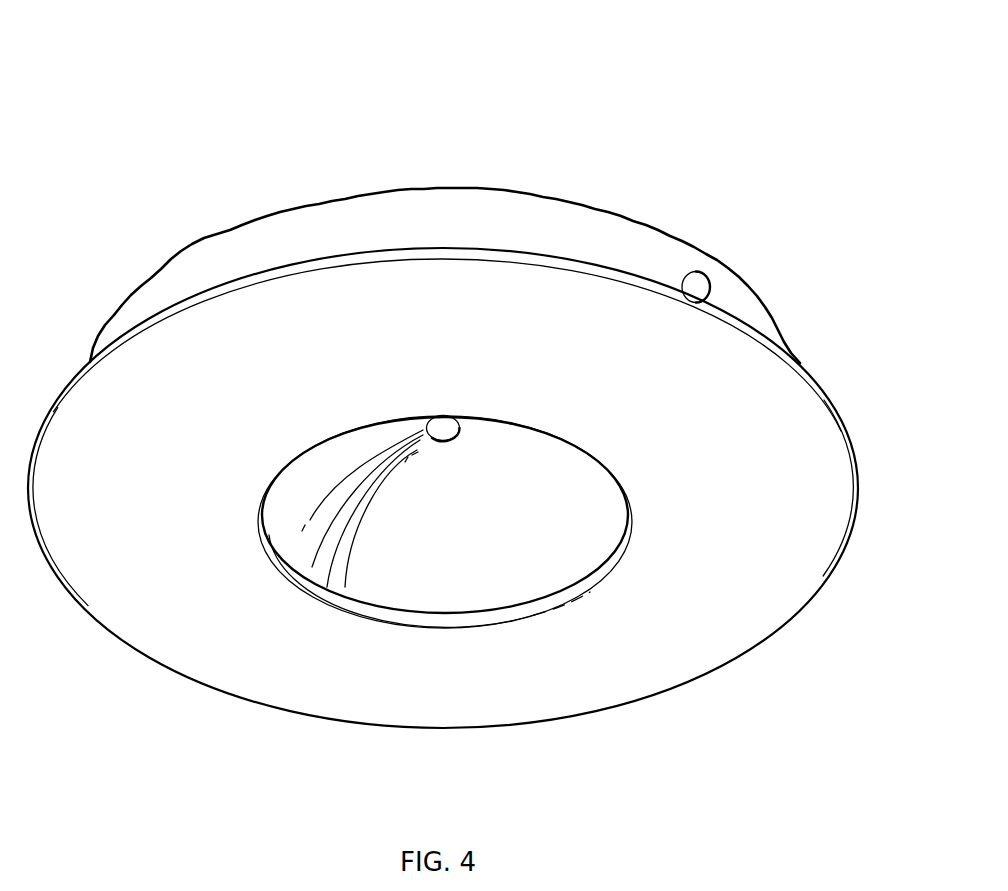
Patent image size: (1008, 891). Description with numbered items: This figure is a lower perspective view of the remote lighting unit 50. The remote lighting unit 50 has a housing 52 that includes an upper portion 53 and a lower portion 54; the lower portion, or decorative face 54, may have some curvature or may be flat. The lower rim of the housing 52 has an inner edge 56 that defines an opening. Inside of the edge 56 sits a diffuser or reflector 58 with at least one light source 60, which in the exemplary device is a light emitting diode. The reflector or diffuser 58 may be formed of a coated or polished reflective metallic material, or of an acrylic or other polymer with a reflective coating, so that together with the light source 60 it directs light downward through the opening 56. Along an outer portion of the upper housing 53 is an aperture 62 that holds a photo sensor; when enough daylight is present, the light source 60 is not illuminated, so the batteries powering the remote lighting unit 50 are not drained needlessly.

The remote lighting unit 50 is at (452, 405).
The housing 52 is at (452, 439).
The upper portion 53 is at (336, 226).
The lower portion 54 is at (737, 613).
The inner edge 56 is at (397, 627).
The diffuser or reflector 58 is at (473, 577).
The light source 60 is at (449, 433).
The aperture 62 is at (697, 288).